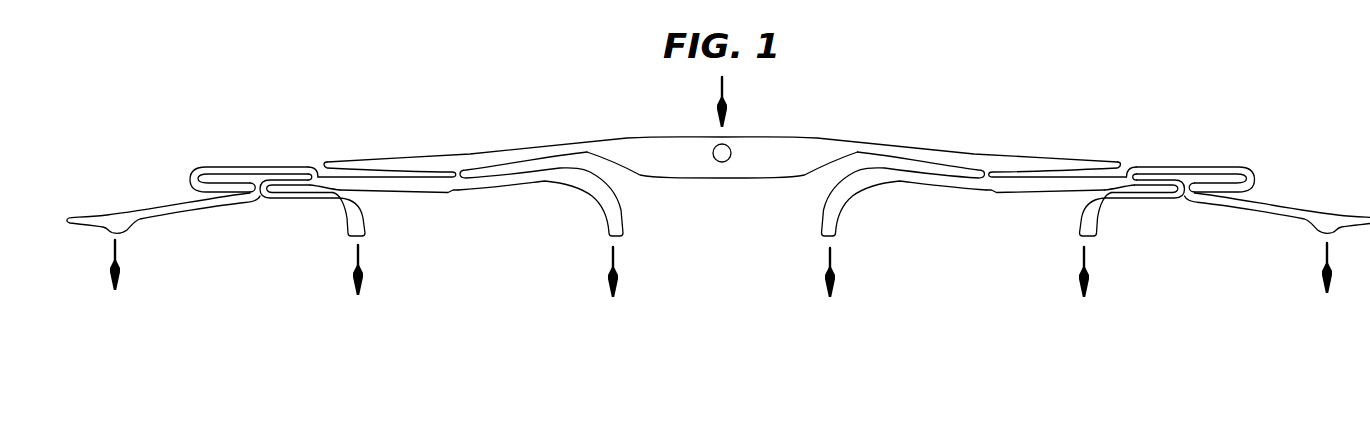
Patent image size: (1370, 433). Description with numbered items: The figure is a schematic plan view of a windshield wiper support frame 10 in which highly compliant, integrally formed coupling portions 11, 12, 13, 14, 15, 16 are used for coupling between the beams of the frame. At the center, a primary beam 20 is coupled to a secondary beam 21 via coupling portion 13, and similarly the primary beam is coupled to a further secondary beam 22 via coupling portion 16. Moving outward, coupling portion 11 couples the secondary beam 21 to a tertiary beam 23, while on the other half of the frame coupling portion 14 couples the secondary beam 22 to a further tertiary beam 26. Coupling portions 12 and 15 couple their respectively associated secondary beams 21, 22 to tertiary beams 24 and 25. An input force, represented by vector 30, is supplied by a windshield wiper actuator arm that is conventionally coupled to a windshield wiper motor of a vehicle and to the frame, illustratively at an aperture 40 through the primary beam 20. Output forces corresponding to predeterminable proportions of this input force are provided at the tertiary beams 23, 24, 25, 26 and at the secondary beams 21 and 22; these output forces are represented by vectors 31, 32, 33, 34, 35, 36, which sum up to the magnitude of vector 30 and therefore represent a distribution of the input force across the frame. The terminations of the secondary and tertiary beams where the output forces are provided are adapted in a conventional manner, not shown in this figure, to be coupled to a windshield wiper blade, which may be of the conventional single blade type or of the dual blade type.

The windshield wiper support frame 10 is at (714, 277).
The coupling portion 11 is at (230, 166).
The coupling portion 12 is at (280, 200).
The coupling portion 13 is at (453, 178).
The coupling portion 14 is at (1234, 176).
The coupling portion 15 is at (1197, 204).
The coupling portion 16 is at (987, 180).
The primary beam 20 is at (797, 144).
The secondary beam 21 is at (493, 182).
The secondary beam 22 is at (915, 181).
The tertiary beam 23 is at (148, 213).
The tertiary beam 24 is at (336, 204).
The tertiary beam 25 is at (1099, 219).
The tertiary beam 26 is at (1306, 218).
The vector 30 is at (724, 91).
The vector 31 is at (113, 251).
The vector 32 is at (360, 263).
The vector 33 is at (611, 250).
The vector 34 is at (832, 263).
The vector 35 is at (1082, 262).
The vector 36 is at (1325, 266).
The aperture 40 is at (722, 163).